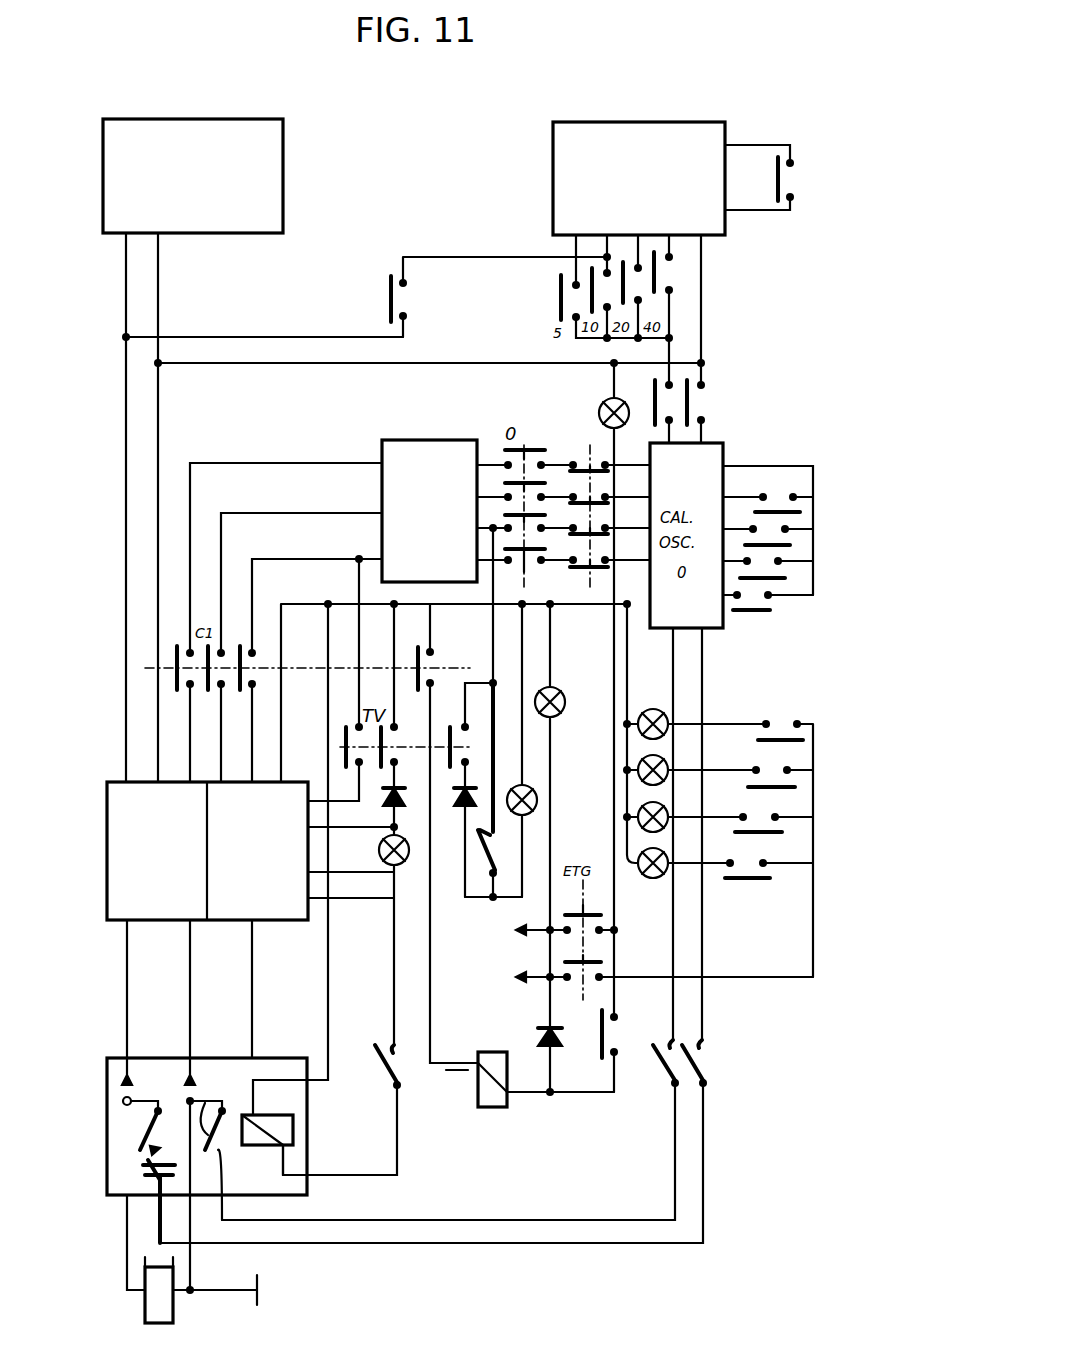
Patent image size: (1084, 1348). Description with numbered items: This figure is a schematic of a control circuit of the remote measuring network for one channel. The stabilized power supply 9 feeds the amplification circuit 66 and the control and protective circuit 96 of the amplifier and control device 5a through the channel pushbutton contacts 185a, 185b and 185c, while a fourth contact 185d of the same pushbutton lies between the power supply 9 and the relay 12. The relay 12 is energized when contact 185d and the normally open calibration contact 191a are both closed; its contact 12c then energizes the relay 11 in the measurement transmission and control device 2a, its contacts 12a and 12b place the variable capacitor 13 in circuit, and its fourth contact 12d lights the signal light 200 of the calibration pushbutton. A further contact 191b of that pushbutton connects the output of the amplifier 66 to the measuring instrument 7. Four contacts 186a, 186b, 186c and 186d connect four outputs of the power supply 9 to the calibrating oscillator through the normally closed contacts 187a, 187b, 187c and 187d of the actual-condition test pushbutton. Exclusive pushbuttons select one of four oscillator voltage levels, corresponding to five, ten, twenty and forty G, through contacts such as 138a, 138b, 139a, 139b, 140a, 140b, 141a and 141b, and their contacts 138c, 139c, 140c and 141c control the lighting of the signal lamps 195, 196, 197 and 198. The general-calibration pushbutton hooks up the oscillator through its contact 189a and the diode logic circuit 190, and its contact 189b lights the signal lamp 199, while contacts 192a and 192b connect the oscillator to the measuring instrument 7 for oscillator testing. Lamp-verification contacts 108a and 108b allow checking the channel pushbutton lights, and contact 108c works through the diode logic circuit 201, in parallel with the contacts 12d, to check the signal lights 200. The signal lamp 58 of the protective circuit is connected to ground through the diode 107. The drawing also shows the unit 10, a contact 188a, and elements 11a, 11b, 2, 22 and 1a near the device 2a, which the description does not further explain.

The ENR unit 10 is at (233, 219).
The measuring instrument 7 is at (697, 207).
The switch contact Z 188a is at (782, 183).
The contact 191b is at (391, 292).
The contact 138b is at (561, 296).
The switch contact 139b is at (592, 298).
The switch contact 140b is at (623, 296).
The switch contact 141b is at (654, 272).
The contact 192a is at (662, 383).
The contact 192b is at (687, 402).
The N/C contact 187a is at (598, 425).
The stabilized power supply 9 is at (433, 579).
The contact 186a is at (505, 450).
The contact 186b is at (505, 483).
The contact 186c is at (505, 515).
The contact 186d is at (524, 572).
The N/C contact 187b is at (608, 471).
The N/C contact 187c is at (608, 503).
The N/C contact 187d is at (608, 567).
The switch contact 141a is at (790, 512).
The switch contact 140a is at (790, 545).
The switch contact 139a is at (770, 578).
The contact 138a is at (750, 612).
The contact 185a is at (177, 660).
The contact 185b is at (240, 680).
The pushbutton contact 185c is at (240, 658).
The contact 185d is at (450, 833).
The amplification circuit 66 is at (165, 900).
The control and protective circuit 96 is at (268, 876).
The amplifier and control device 5a is at (107, 833).
The contact 108a is at (381, 752).
The contact 108b is at (346, 740).
The contact 108c is at (450, 735).
The diode 107 is at (383, 795).
The diode logic circuit 201 is at (455, 795).
The signal lamp 58 is at (379, 851).
The contact 12d is at (478, 852).
The signal light 200 is at (537, 800).
The signal lamp 199 is at (554, 690).
The signal lamp 198 is at (640, 716).
The signal lamp 197 is at (640, 765).
The signal lamp 196 is at (640, 810).
The signal lamp 195 is at (645, 876).
The contact 141c is at (795, 740).
The contact 140c is at (785, 787).
The contact 139c is at (786, 832).
The contact 138c is at (755, 878).
The contact 189b is at (603, 905).
The contact 189a is at (570, 962).
The N/O contact 191a is at (602, 1028).
The diode logic circuit 190 is at (538, 1036).
The relay 12 is at (493, 1107).
The contact 12a is at (655, 1060).
The contact 12b is at (695, 1068).
The N/O contact 12c is at (342, 1110).
The measurement transmission and control device 2a is at (107, 1066).
The switch 11b is at (140, 1122).
The variable capacitor 13 is at (143, 1168).
The switch 11a is at (210, 1098).
The relay 11 is at (285, 1115).
The relay R 2 is at (272, 1166).
The component 22 is at (145, 1300).
The terminal 1a is at (178, 1310).